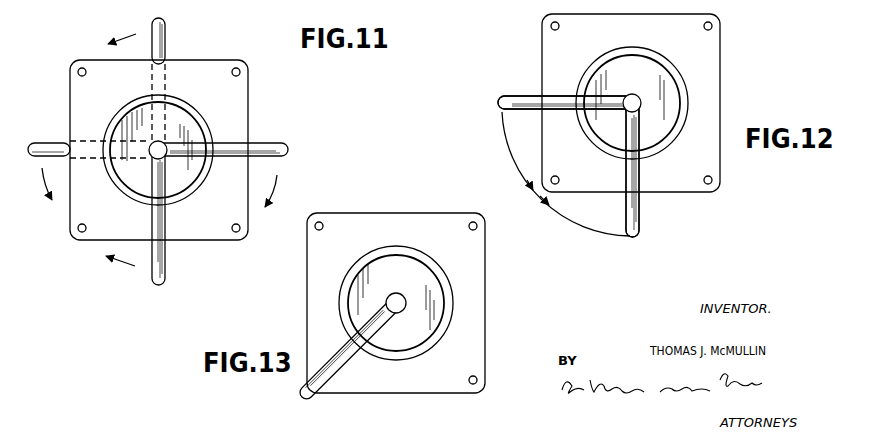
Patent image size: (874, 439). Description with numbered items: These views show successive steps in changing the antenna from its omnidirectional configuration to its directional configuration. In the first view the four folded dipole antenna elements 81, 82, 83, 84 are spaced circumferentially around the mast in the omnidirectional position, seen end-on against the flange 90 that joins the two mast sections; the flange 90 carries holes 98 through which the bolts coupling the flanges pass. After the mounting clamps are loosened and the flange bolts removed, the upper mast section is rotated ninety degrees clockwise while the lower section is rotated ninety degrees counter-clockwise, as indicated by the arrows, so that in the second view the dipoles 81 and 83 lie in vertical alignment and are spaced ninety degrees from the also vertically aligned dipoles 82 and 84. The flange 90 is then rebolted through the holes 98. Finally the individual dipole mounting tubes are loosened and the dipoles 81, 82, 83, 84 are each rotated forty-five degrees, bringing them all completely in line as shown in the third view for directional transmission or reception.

In FIG. 11, the folded dipole antenna element 81 is at (166, 32).
In FIG. 12, the folded dipole antenna element 81 is at (516, 99).
In FIG. 11, the folded dipole antenna element 82 is at (55, 143).
In FIG. 12, the folded dipole antenna element 82 is at (640, 225).
In FIG. 11, the folded dipole antenna element 83 is at (167, 270).
In FIG. 12, the folded dipole antenna element 83 is at (565, 102).
In FIG. 11, the folded dipole antenna element 84 is at (277, 144).
In FIG. 12, the folded dipole antenna element 84 is at (632, 170).
In FIG. 11, the flange 90 is at (72, 101).
In FIG. 12, the flange 90 is at (720, 63).
In FIG. 13, the flange 90 is at (473, 300).
In FIG. 11, the holes 98 is at (82, 69).